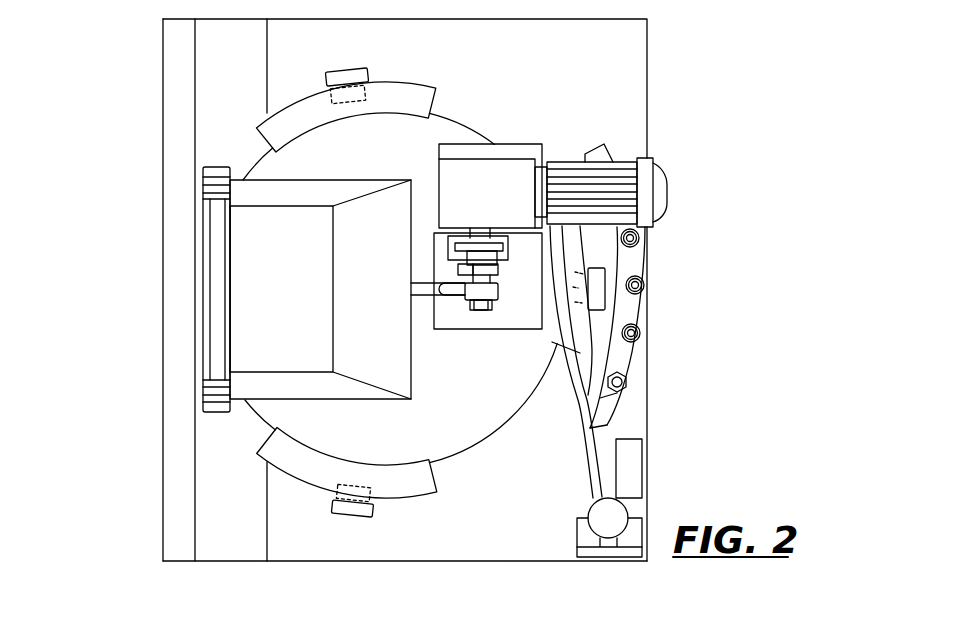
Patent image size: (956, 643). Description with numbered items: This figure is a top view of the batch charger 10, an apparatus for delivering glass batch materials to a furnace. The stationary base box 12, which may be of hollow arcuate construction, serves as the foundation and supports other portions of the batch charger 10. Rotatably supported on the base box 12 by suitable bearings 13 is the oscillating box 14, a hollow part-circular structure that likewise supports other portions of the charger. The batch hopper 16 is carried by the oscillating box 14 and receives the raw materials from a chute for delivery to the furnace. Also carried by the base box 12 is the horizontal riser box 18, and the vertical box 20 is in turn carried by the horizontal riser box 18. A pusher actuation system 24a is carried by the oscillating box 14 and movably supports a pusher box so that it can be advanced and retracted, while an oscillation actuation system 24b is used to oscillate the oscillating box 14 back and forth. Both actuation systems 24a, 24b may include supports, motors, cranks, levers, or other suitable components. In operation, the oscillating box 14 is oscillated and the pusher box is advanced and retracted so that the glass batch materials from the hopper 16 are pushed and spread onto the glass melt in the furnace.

The batch charger 10 is at (760, 118).
The base box 12 is at (652, 115).
The bearings 13 is at (376, 68).
The oscillating box 14 is at (483, 443).
The batch hopper 16 is at (294, 291).
The horizontal riser box 18 is at (217, 573).
The vertical box 20 is at (143, 278).
The pusher actuation system 24a is at (553, 145).
The oscillation actuation system 24b is at (645, 518).